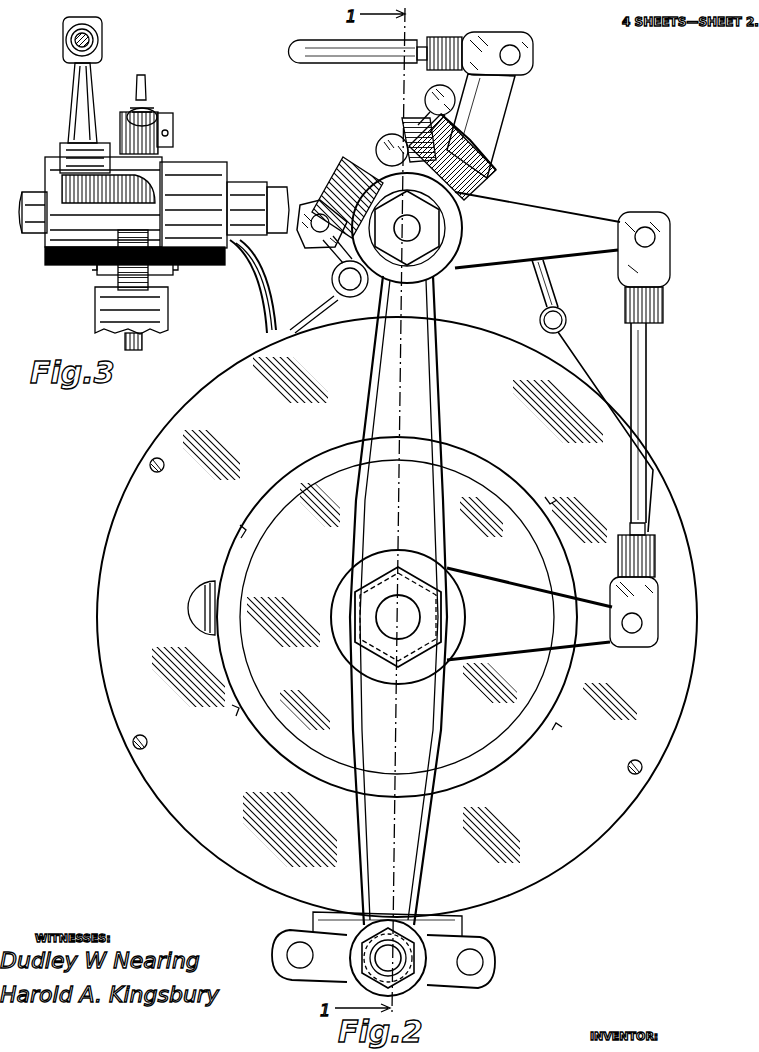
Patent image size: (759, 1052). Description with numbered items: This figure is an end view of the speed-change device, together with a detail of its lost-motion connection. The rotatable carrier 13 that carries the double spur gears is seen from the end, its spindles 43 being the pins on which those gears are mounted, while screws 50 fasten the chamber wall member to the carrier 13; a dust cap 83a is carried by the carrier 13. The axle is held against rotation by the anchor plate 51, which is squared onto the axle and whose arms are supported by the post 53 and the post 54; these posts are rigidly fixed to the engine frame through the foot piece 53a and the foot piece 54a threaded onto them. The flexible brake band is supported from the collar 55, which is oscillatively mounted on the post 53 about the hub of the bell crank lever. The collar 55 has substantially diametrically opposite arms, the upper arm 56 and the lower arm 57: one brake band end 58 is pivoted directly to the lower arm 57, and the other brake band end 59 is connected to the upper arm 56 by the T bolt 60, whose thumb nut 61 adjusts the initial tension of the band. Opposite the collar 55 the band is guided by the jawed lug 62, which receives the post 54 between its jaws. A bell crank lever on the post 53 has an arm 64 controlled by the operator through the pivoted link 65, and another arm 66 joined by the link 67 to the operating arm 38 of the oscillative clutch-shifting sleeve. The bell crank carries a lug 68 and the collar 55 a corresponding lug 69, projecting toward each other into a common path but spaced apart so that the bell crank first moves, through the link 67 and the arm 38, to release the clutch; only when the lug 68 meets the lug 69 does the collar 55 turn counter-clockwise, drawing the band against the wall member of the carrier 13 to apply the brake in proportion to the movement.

In FIG. 2, the carrier 13 is at (397, 617).
In FIG. 2, the dust cap 83a is at (397, 617).
In FIG. 2, the arm 38 is at (538, 625).
In FIG. 2, the spindles 43 is at (198, 622).
In FIG. 2, the screws 50 is at (642, 768).
In FIG. 3, the anchor plate 51 is at (247, 308).
In FIG. 2, the anchor plate 51 is at (405, 750).
In FIG. 3, the post 53 is at (35, 233).
In FIG. 2, the post 53 is at (413, 230).
In FIG. 2, the foot piece 53a is at (317, 210).
In FIG. 2, the post 54 is at (390, 963).
In FIG. 2, the foot piece 54a is at (320, 975).
In FIG. 3, the collar 55 is at (167, 160).
In FIG. 3, the arm 56 is at (160, 147).
In FIG. 2, the arm 56 is at (488, 158).
In FIG. 3, the arm 57 is at (98, 283).
In FIG. 2, the arm 57 is at (334, 272).
In FIG. 3, the brake band end 58 is at (100, 310).
In FIG. 2, the brake band end 58 is at (332, 305).
In FIG. 2, the brake band end 59 is at (560, 338).
In FIG. 3, the T bolt 60 is at (143, 341).
In FIG. 2, the T bolt 60 is at (553, 274).
In FIG. 3, the thumb nut 61 is at (147, 72).
In FIG. 2, the thumb nut 61 is at (428, 96).
In FIG. 2, the jawed lug 62 is at (460, 930).
In FIG. 3, the arm 64 is at (90, 89).
In FIG. 2, the arm 64 is at (492, 101).
In FIG. 3, the link 65 is at (100, 29).
In FIG. 2, the link 65 is at (331, 60).
In FIG. 2, the arm 66 is at (560, 222).
In FIG. 2, the link 67 is at (645, 407).
In FIG. 3, the lug 68 is at (70, 152).
In FIG. 2, the lug 68 is at (350, 170).
In FIG. 3, the lug 69 is at (72, 183).
In FIG. 2, the lug 69 is at (333, 183).